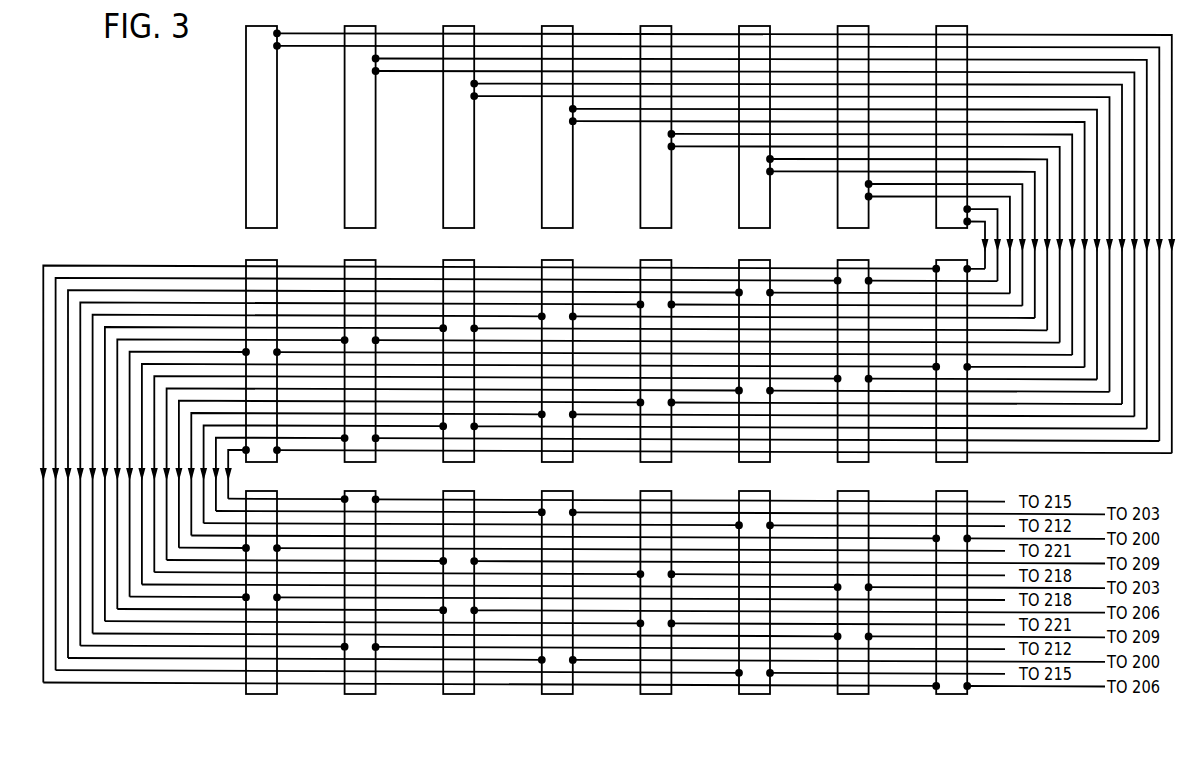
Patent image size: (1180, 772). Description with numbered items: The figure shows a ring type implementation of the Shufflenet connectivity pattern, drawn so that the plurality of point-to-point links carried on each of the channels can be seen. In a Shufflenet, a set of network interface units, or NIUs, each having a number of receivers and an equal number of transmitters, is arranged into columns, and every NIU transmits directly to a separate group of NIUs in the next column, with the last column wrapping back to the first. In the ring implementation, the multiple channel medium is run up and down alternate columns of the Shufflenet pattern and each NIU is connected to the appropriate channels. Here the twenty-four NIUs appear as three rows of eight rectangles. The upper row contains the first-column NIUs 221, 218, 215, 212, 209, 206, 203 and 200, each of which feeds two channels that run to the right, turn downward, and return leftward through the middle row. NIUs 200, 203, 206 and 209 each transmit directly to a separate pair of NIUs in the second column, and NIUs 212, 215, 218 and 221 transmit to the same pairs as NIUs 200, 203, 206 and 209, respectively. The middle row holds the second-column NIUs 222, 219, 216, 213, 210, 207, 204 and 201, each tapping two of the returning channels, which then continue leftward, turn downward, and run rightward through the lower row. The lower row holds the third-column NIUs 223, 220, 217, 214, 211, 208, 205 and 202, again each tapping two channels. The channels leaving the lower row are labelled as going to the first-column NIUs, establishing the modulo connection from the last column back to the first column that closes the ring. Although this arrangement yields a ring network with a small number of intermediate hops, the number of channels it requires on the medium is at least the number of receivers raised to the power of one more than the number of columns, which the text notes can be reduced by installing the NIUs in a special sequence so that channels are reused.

The NIU 200 is at (953, 115).
The NIU 201 is at (951, 349).
The NIU 202 is at (951, 579).
The NIU 203 is at (855, 115).
The NIU 204 is at (853, 349).
The NIU 205 is at (853, 579).
The NIU 206 is at (756, 115).
The NIU 207 is at (754, 349).
The NIU 208 is at (754, 579).
The NIU 209 is at (657, 115).
The NIU 210 is at (655, 349).
The NIU 211 is at (655, 579).
The NIU 212 is at (559, 115).
The NIU 213 is at (557, 349).
The NIU 214 is at (557, 579).
The NIU 215 is at (460, 115).
The NIU 216 is at (458, 349).
The NIU 217 is at (458, 579).
The NIU 218 is at (362, 115).
The NIU 219 is at (360, 349).
The NIU 220 is at (360, 579).
The NIU 221 is at (263, 115).
The NIU 222 is at (261, 349).
The NIU 223 is at (261, 579).